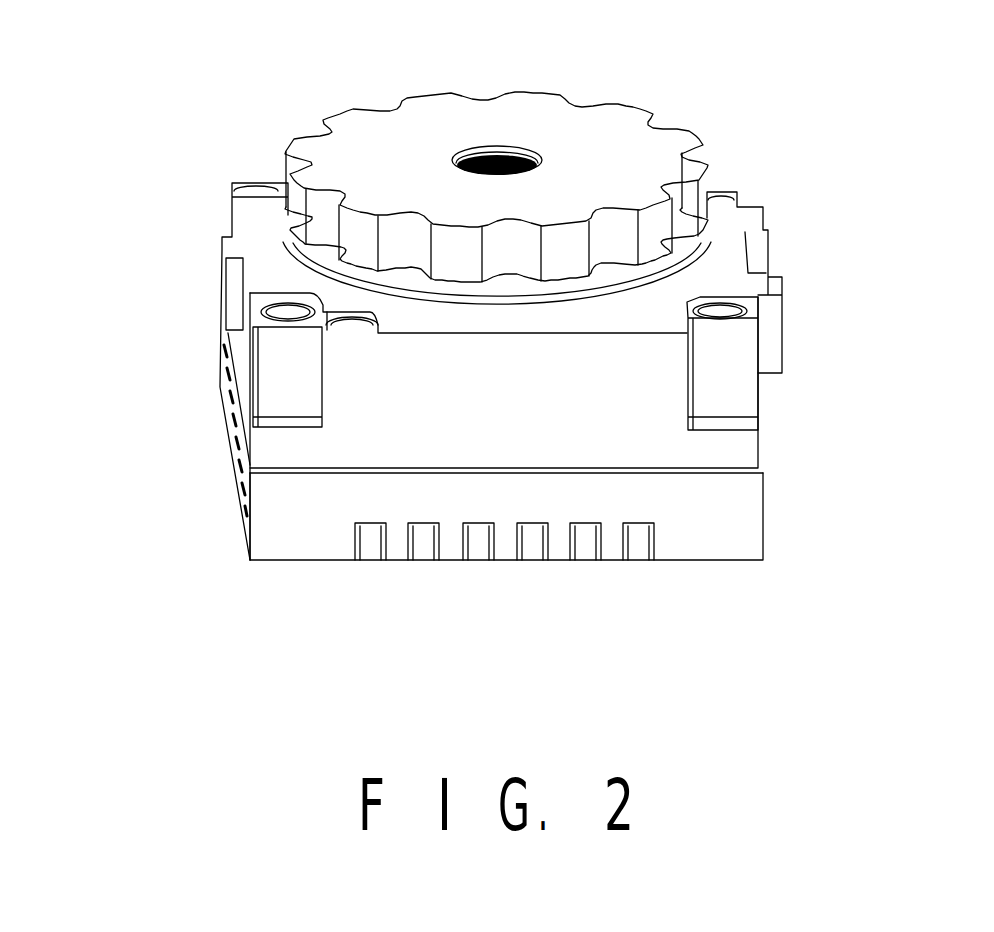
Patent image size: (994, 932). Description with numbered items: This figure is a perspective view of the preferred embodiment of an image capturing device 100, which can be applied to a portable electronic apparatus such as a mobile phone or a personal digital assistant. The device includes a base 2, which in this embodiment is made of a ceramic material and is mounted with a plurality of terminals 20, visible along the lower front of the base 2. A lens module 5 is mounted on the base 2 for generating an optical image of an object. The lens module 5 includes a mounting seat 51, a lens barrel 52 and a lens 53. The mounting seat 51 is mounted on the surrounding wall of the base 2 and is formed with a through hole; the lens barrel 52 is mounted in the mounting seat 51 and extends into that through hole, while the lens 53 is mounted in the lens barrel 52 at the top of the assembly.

The image capturing device 100 is at (241, 150).
The lens module 5 is at (786, 288).
The mounting seat 51 is at (723, 367).
The lens barrel 52 is at (657, 258).
The lens 53 is at (505, 160).
The base 2 is at (702, 560).
The terminals 20 is at (425, 543).